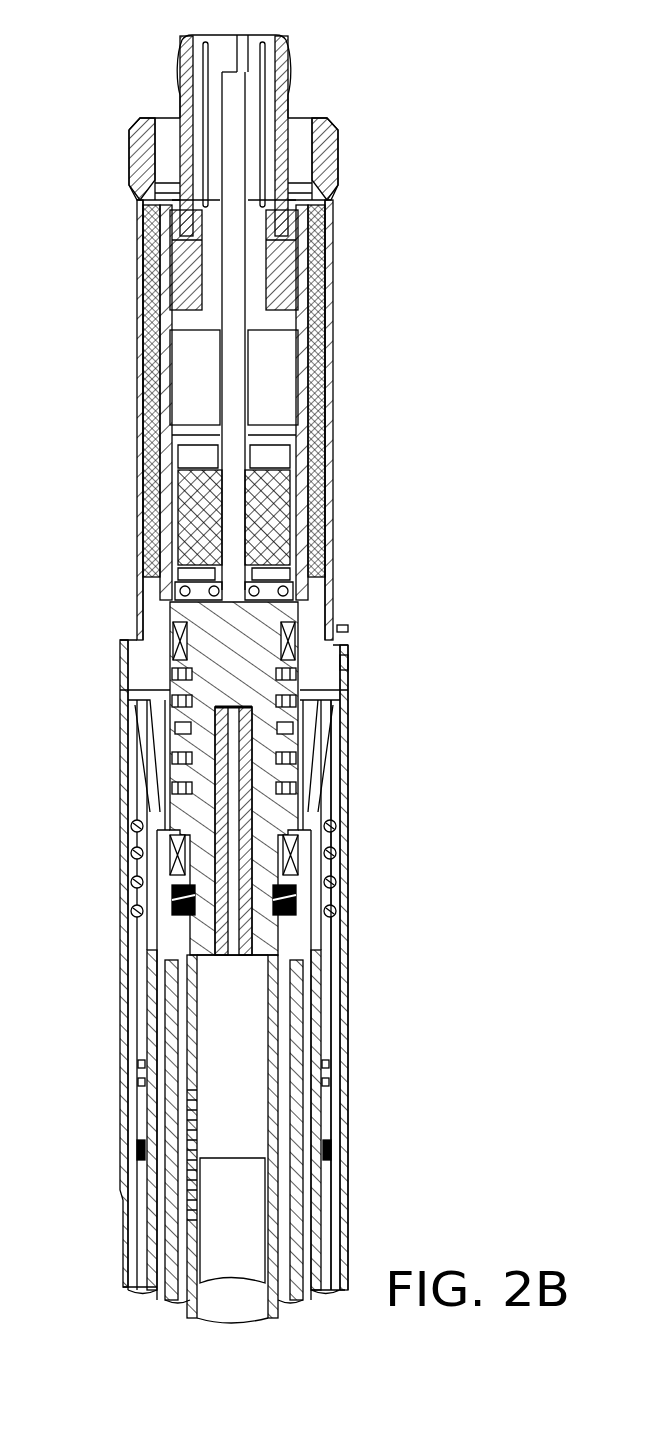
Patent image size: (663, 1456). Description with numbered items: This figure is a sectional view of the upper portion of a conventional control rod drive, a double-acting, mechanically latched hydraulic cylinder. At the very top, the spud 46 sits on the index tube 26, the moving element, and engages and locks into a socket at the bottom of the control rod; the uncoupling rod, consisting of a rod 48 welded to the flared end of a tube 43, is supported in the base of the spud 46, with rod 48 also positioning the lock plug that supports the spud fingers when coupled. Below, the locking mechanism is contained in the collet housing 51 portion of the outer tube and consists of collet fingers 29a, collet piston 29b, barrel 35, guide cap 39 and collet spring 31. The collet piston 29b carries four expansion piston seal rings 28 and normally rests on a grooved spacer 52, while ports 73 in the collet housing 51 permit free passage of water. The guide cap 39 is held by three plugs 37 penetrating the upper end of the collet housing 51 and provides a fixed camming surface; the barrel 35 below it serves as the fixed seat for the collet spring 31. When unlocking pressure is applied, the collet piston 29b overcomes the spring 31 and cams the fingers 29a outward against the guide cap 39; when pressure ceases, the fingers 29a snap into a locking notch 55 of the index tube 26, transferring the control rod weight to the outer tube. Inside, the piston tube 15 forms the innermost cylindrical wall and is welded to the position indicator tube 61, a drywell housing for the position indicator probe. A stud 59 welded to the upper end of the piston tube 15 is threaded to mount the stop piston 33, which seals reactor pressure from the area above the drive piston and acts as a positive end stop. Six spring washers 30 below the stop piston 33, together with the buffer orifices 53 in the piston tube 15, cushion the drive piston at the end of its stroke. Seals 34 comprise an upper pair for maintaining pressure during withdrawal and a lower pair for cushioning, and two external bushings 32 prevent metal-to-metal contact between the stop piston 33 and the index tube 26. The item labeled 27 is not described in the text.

The piston tube 15 is at (199, 1038).
The index tube 26 is at (297, 898).
The lock pin 27 is at (150, 1112).
The expansion piston seal rings 28 is at (330, 1075).
The collet fingers 29a is at (150, 750).
The collet piston 29b is at (325, 1010).
The spring washers 30 is at (145, 935).
The collet spring 31 is at (126, 860).
The external bushings 32 is at (170, 630).
The stop piston 33 is at (330, 805).
The seals 34 is at (172, 675).
The barrel 35 is at (320, 760).
The plugs 37 is at (346, 665).
The guide cap 39 is at (342, 640).
The tube 43 is at (215, 383).
The spud 46 is at (178, 88).
The rod 48 is at (232, 85).
The collet housing 51 is at (336, 995).
The spacer 52 is at (335, 1150).
The buffer orifices 53 is at (197, 1134).
The index tube locking notch 55 is at (335, 1110).
The stud 59 is at (206, 957).
The position indicator tube 61 is at (246, 1235).
The ports 73 is at (345, 945).